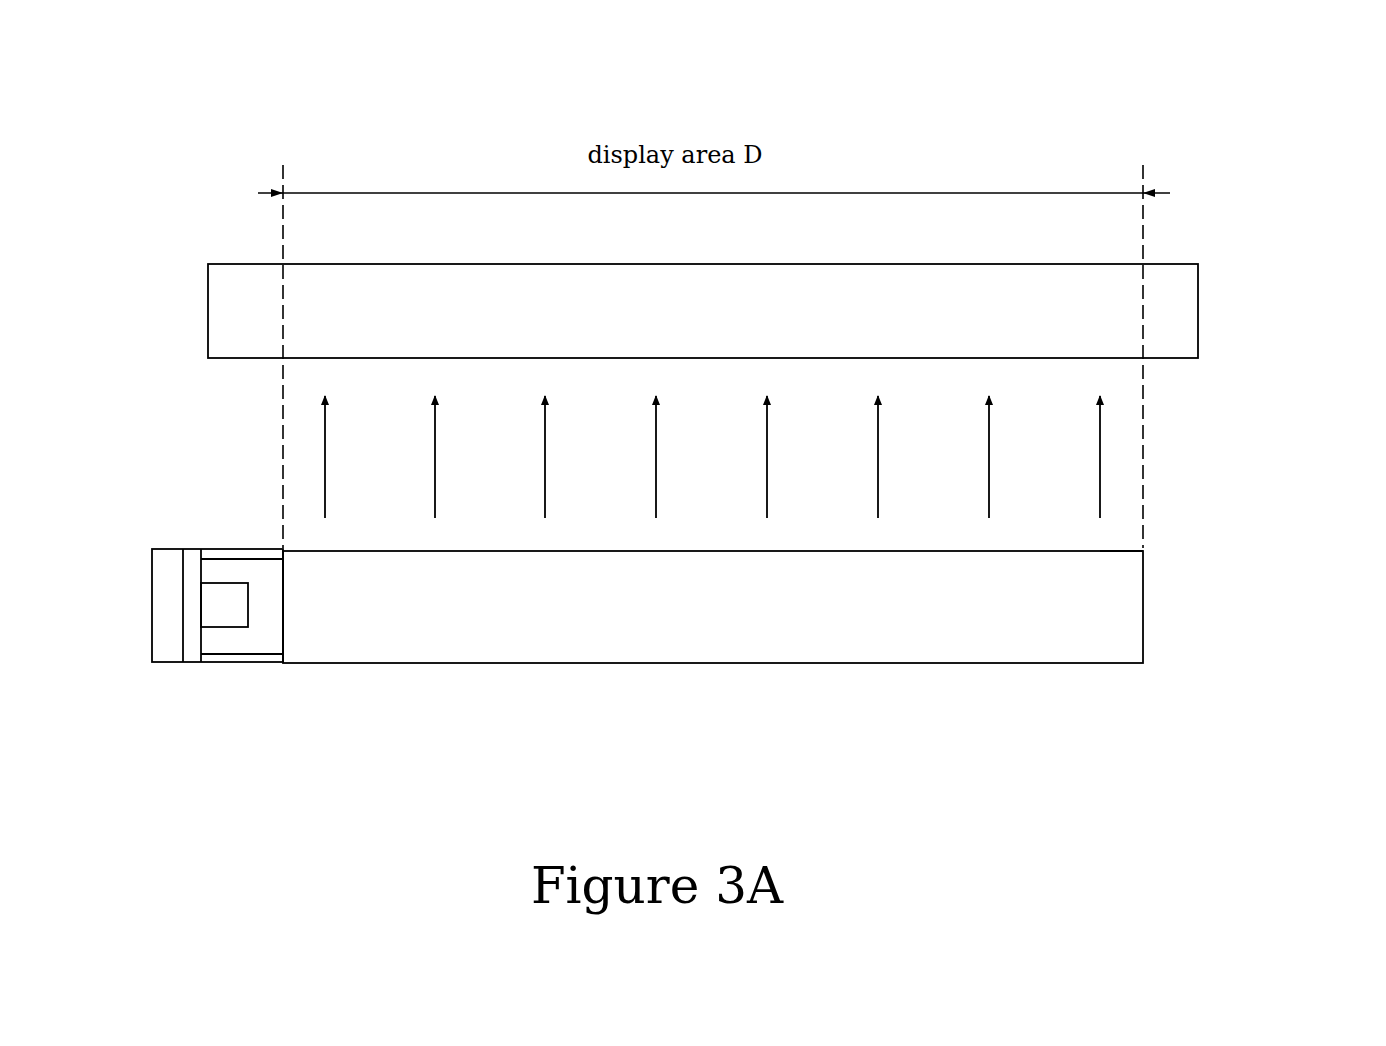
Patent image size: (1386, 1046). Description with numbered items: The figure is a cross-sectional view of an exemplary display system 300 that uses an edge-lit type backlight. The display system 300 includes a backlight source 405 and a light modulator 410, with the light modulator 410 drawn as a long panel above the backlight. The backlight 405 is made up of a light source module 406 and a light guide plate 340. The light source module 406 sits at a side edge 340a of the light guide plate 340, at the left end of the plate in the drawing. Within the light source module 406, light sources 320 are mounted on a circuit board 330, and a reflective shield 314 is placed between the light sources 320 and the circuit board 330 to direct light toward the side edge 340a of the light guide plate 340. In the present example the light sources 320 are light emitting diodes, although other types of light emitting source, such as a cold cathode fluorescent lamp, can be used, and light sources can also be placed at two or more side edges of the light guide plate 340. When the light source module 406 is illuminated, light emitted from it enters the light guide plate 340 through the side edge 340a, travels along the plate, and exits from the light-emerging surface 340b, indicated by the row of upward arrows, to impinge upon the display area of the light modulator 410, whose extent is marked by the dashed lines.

The display system 300 is at (205, 33).
The reflective shield 314 is at (195, 550).
The light sources 320 is at (226, 617).
The circuit board 330 is at (168, 608).
The light guide plate 340 is at (1130, 633).
The side edge 340a is at (286, 609).
The light-emerging surface 340b is at (1106, 546).
The backlight source 405 is at (1300, 422).
The light source module 406 is at (150, 757).
The light modulator 410 is at (1178, 320).